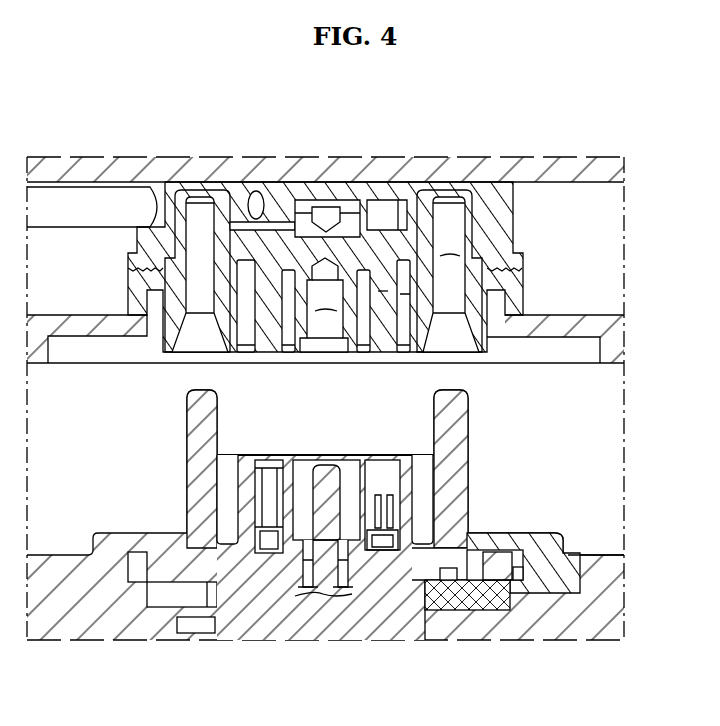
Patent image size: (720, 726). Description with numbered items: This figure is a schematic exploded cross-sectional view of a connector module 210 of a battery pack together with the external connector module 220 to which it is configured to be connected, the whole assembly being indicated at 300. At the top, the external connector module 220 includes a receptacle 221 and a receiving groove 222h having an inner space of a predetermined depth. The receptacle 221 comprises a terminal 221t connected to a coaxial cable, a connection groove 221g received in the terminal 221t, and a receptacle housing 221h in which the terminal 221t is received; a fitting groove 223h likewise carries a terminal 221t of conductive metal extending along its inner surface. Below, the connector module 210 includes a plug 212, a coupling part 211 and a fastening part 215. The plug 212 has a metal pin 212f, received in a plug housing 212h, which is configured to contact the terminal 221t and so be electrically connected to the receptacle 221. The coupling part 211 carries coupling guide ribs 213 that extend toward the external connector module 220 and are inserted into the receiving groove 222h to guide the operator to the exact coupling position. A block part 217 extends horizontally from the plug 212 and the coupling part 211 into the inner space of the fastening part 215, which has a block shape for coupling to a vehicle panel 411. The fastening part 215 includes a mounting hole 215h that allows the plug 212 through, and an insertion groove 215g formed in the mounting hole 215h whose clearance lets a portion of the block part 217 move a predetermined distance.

The mold apparatus 300 is at (42, 147).
The external connector module 220 is at (183, 178).
The receptacle 221 is at (310, 284).
The terminal 221t is at (327, 305).
The connection groove 221g is at (383, 290).
The receptacle housing 221h is at (407, 292).
The receiving groove 222h is at (190, 258).
The fitting groove 223h is at (453, 250).
The connector module 210 is at (366, 650).
The coupling part 211 is at (427, 632).
The plug 212 is at (372, 412).
The plug housing 212h is at (285, 458).
The pin 212f is at (327, 468).
The coupling guide rib 213 is at (187, 433).
The fastening part 215 is at (537, 550).
The insertion groove 215g is at (515, 582).
The mounting hole 215h is at (322, 597).
The block part 217 is at (490, 562).
The panel 411 is at (603, 553).